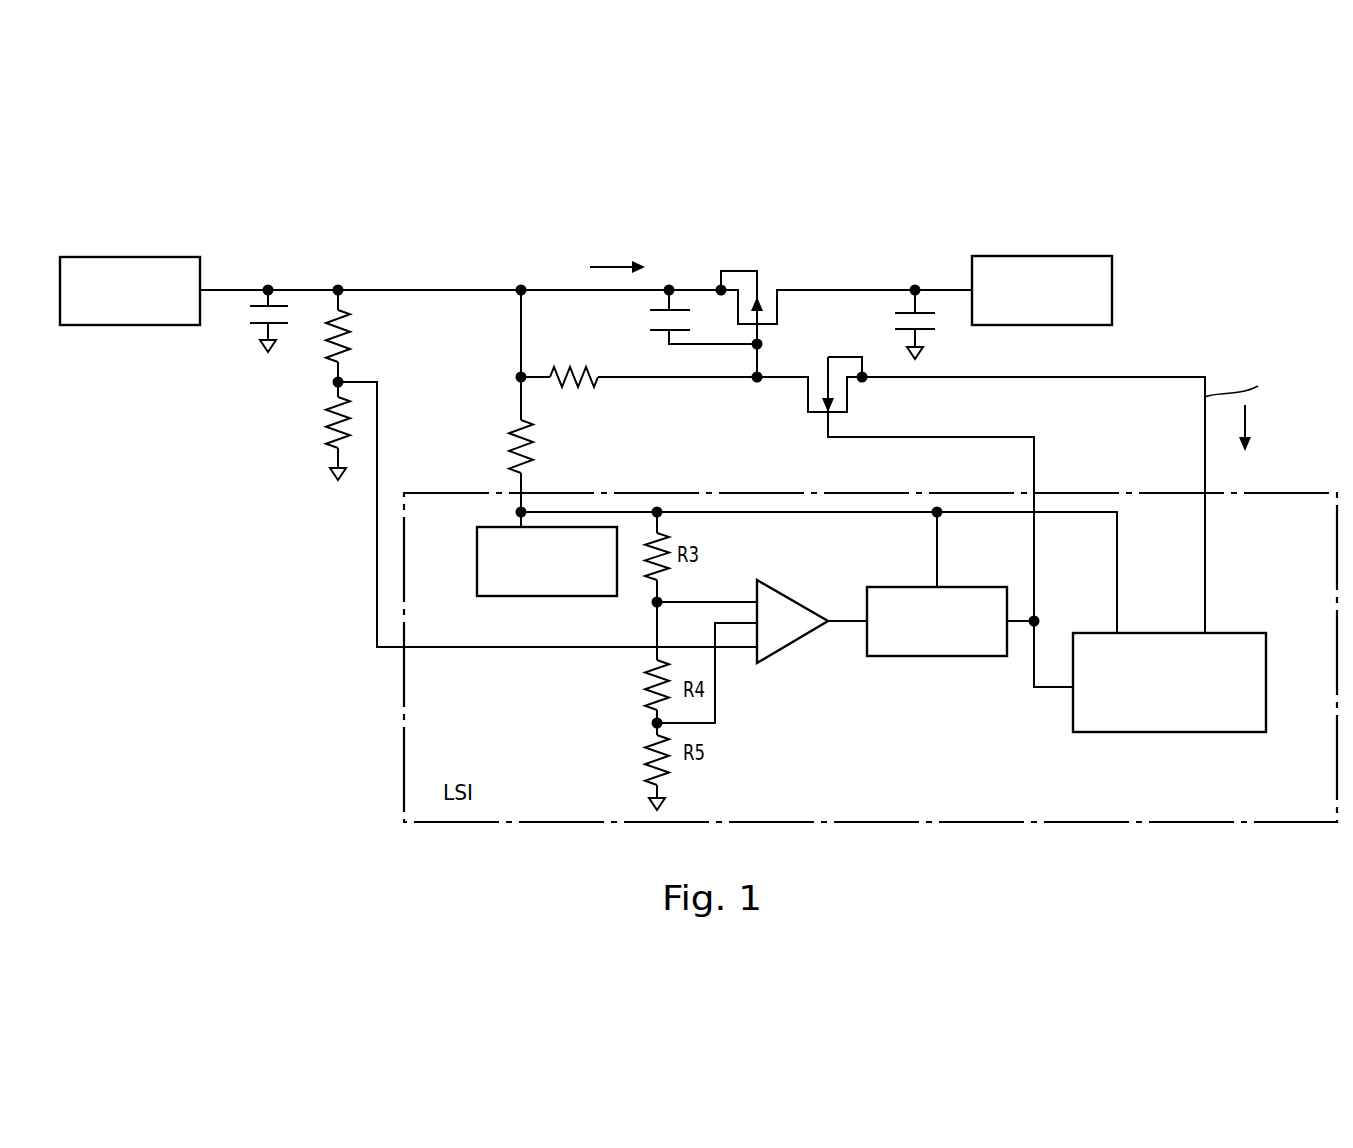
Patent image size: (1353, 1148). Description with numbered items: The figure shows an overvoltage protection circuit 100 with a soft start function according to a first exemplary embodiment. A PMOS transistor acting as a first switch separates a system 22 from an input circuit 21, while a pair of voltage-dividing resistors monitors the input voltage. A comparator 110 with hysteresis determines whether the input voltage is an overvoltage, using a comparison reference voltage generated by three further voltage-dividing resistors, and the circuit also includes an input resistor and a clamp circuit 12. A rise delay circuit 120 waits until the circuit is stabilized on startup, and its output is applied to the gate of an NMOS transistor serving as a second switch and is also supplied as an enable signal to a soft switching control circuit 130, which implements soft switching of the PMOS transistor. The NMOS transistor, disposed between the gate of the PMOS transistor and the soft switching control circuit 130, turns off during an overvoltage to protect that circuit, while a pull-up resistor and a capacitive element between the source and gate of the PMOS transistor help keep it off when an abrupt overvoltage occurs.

The overvoltage protection circuit 100 is at (798, 209).
The input circuit 21 is at (174, 257).
The system 22 is at (1077, 256).
The clamp circuit 12 is at (477, 563).
The comparator 110 is at (805, 635).
The rise delay circuit 120 is at (898, 657).
The soft switching control circuit 130 is at (1140, 733).